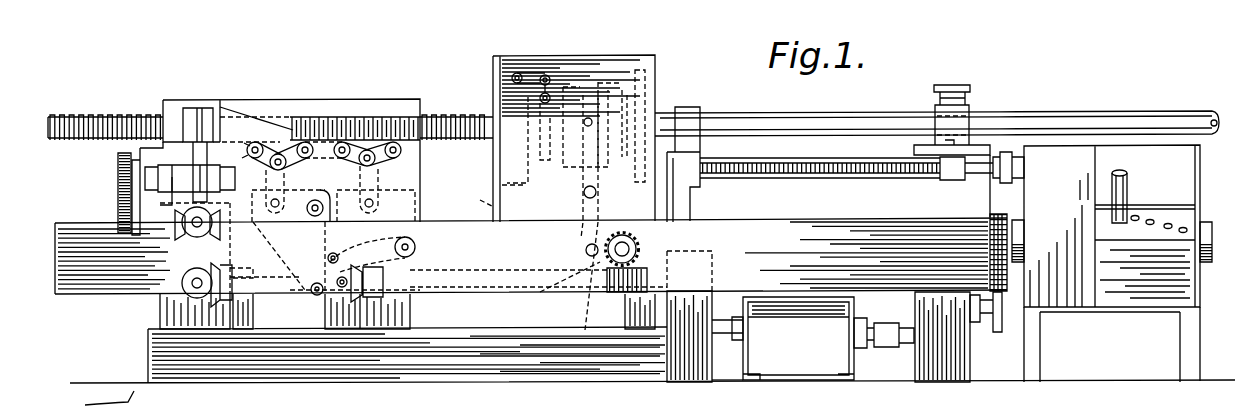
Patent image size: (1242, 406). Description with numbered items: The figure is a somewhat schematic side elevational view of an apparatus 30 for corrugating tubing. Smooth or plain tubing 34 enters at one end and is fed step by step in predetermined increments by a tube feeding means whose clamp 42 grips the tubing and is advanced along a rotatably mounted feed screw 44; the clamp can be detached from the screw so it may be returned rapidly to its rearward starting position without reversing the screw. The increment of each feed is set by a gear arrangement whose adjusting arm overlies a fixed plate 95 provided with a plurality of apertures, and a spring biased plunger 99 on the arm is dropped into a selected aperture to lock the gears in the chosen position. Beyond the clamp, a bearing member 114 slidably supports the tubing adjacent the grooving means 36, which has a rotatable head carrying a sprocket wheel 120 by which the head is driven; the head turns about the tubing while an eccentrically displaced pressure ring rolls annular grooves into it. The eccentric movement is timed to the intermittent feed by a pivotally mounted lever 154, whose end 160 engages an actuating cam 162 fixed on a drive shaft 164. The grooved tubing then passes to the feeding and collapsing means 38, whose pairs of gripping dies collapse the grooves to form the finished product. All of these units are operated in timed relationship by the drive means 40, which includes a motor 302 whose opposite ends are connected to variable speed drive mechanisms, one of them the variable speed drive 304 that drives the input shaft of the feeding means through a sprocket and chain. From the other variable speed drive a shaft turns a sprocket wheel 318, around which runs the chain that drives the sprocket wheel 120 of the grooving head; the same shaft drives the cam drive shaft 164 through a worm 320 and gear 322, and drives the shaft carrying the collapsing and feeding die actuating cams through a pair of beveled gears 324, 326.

The apparatus 30 is at (864, 112).
The tubing 34 is at (1070, 118).
The grooving means 36 is at (642, 56).
The feeding and collapsing means 38 is at (219, 98).
The drive means 40 is at (652, 366).
The clamp 42 is at (971, 105).
The feed screw 44 is at (728, 175).
The fixed plate 95 is at (1173, 210).
The spring biased plunger 99 is at (1127, 193).
The bearing member 114 is at (685, 110).
The sprocket wheel 120 is at (640, 72).
The lever 154 is at (478, 203).
The end of lever 160 is at (586, 248).
The actuating cam 162 is at (540, 295).
The drive shaft 164 is at (640, 250).
The motor 302 is at (815, 367).
The variable speed drive mechanism 304 is at (952, 350).
The sprocket wheel 318 is at (691, 366).
The worm 320 is at (575, 290).
The gear 322 is at (623, 232).
The beveled gear 324 is at (1101, 356).
The beveled gear 326 is at (700, 384).